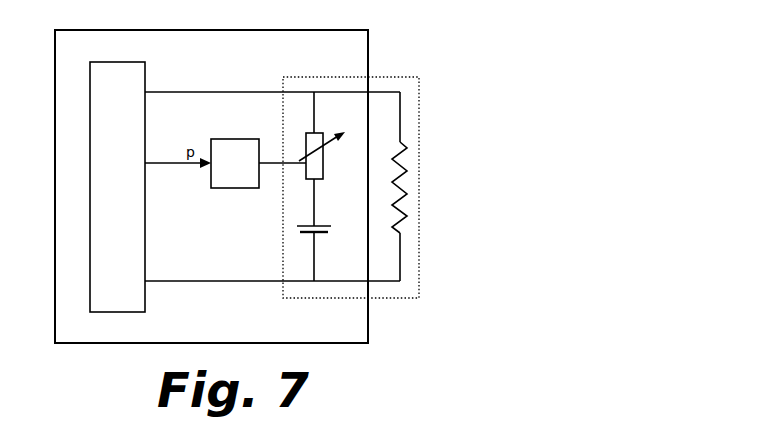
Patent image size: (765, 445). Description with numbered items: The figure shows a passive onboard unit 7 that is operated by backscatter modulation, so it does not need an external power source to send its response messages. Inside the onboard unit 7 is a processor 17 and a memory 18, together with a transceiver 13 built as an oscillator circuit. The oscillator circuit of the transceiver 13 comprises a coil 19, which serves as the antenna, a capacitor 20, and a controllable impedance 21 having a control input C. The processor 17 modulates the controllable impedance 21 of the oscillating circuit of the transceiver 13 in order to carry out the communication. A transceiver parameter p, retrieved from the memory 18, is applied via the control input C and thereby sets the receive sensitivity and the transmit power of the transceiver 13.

The onboard unit 7 is at (54, 183).
The processor 17 is at (147, 69).
The transceiver 13 is at (298, 77).
The memory 18 is at (222, 189).
The controllable impedance 21 is at (305, 142).
The capacitor 20 is at (305, 234).
The coil 19 is at (405, 195).